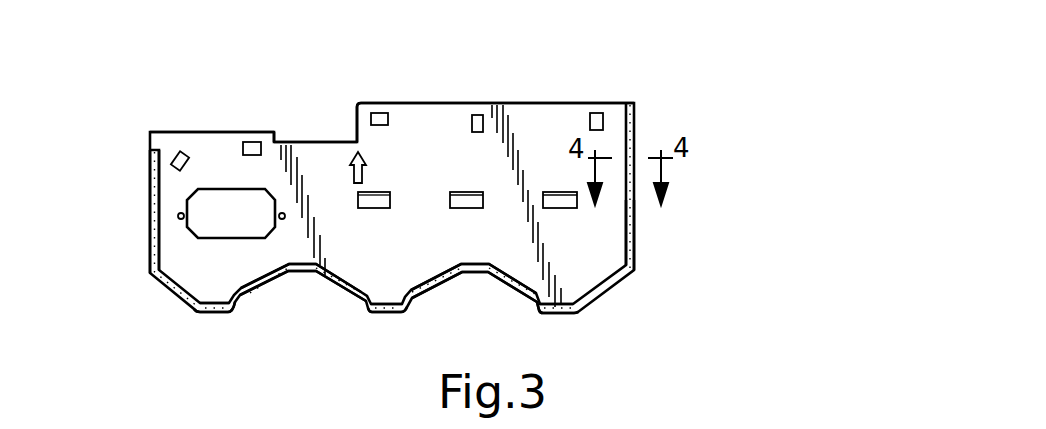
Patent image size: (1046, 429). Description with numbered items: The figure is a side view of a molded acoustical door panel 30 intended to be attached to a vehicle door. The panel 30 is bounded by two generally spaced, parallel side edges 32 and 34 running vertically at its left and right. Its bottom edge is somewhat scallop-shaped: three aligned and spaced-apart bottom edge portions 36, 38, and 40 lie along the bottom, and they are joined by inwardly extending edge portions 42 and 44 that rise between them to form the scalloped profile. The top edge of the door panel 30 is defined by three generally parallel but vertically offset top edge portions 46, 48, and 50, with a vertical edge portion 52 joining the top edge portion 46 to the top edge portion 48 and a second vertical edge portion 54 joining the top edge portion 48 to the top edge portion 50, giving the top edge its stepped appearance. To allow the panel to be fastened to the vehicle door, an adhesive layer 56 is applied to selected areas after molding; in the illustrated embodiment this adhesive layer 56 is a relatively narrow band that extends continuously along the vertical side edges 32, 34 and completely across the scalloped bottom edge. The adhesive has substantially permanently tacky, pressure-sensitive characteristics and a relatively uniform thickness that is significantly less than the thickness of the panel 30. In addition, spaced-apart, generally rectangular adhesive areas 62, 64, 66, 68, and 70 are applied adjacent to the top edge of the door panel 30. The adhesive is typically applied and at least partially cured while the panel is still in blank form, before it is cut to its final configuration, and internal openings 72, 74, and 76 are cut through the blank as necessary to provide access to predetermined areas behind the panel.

The molded acoustical door panel 30 is at (648, 65).
The side edge 32 is at (150, 239).
The side edge 34 is at (635, 237).
The bottom edge portion 36 is at (208, 314).
The bottom edge portion 38 is at (384, 313).
The bottom edge portion 40 is at (557, 313).
The inwardly extending edge portion 42 is at (265, 286).
The inwardly extending edge portion 44 is at (440, 287).
The top edge portion 46 is at (198, 132).
The top edge portion 48 is at (312, 142).
The top edge portion 50 is at (533, 103).
The vertical edge portion 52 is at (277, 140).
The vertical edge portion 54 is at (356, 122).
The adhesive layer 56 is at (150, 184).
The adhesive area 62 is at (172, 152).
The adhesive area 64 is at (252, 141).
The adhesive area 66 is at (389, 115).
The adhesive area 68 is at (472, 118).
The adhesive area 70 is at (596, 113).
The opening 72 is at (363, 198).
The opening 74 is at (477, 198).
The opening 76 is at (550, 198).